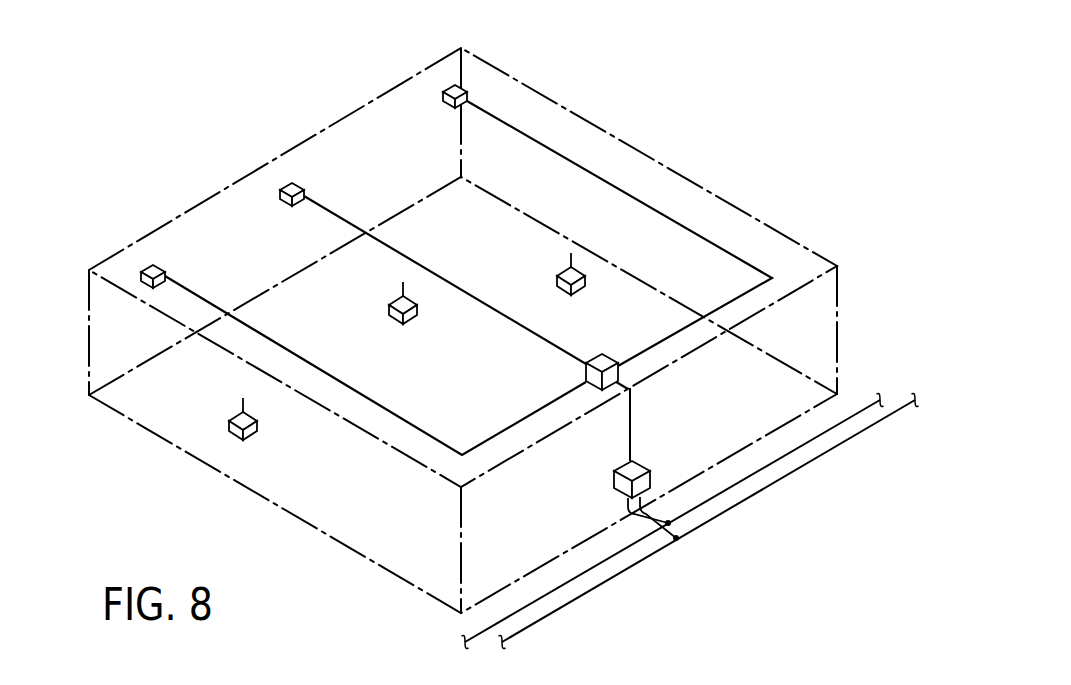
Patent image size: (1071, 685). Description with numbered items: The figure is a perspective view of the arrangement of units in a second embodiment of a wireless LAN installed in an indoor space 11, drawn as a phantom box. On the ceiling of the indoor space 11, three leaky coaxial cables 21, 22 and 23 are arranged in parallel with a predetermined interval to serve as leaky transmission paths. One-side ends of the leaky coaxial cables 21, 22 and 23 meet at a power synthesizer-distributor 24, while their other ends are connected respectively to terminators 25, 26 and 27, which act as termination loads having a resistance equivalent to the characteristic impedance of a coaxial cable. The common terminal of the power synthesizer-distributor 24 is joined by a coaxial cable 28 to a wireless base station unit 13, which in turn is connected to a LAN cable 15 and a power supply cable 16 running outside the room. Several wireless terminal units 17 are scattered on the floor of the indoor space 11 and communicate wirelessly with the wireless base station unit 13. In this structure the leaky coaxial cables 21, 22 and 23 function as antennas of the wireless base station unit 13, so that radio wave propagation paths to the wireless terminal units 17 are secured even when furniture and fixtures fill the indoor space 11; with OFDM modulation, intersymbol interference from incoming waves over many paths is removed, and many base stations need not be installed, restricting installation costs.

The indoor space 11 is at (393, 88).
The wireless base station unit 13 is at (616, 487).
The LAN cable 15 is at (742, 500).
The power supply cable 16 is at (797, 450).
The wireless terminal units 17 is at (256, 432).
The leaky coaxial cable 21 is at (299, 357).
The leaky coaxial cable 22 is at (421, 269).
The leaky coaxial cable 23 is at (548, 148).
The power synthesizer-distributor 24 is at (585, 376).
The terminator 25 is at (143, 265).
The terminator 26 is at (285, 185).
The terminator 27 is at (455, 85).
The coaxial cable 28 is at (631, 421).